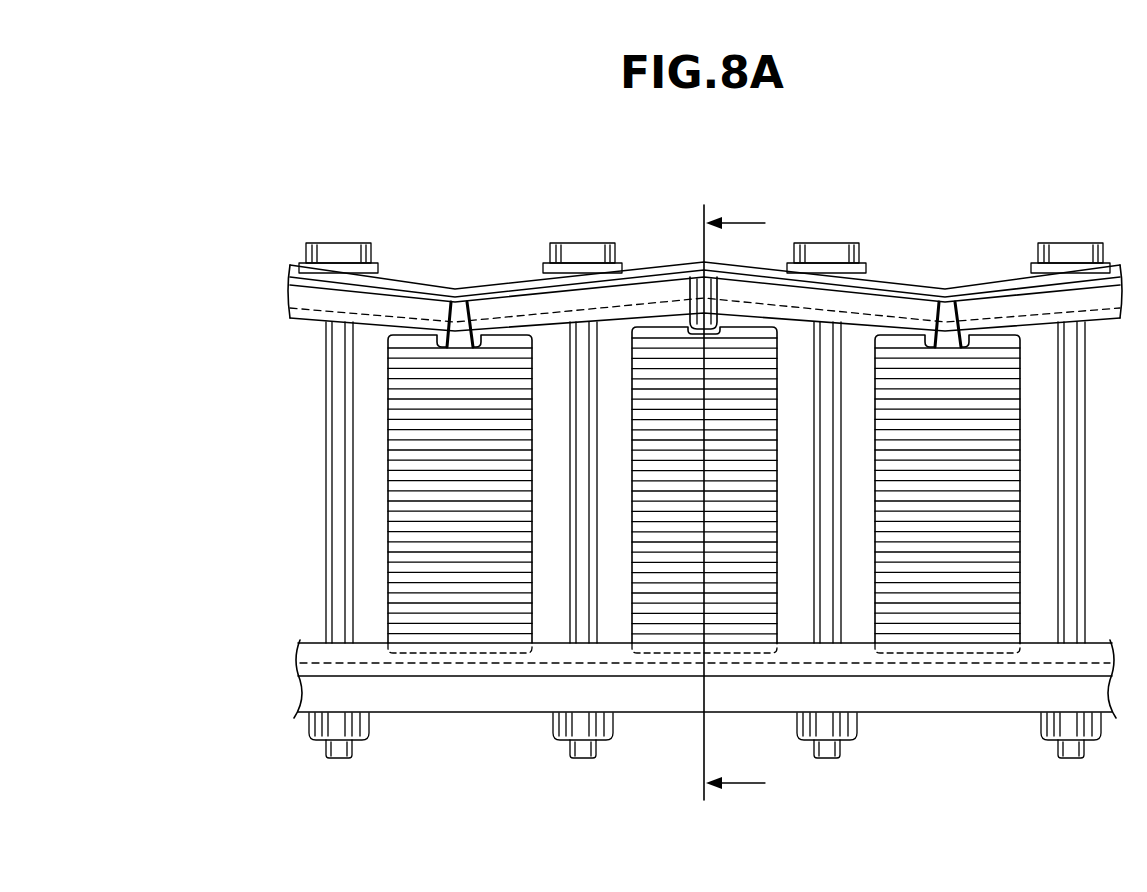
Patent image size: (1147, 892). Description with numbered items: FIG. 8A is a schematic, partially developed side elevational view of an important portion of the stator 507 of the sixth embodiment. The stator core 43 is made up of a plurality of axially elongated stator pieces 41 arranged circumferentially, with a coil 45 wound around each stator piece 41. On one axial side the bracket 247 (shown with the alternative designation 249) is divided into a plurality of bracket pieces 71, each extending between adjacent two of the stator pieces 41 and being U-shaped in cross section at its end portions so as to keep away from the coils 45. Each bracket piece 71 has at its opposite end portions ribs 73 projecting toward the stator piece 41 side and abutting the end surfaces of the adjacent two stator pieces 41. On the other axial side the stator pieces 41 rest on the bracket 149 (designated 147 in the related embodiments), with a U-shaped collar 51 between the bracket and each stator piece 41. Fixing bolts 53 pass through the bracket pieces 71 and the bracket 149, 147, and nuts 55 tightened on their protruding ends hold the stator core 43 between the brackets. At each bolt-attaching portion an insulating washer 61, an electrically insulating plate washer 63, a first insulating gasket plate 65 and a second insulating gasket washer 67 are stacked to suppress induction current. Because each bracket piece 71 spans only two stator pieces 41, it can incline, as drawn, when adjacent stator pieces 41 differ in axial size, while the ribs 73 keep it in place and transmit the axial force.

The stator 507 is at (863, 185).
The bracket 247 is at (284, 320).
The bracket 249 is at (667, 265).
The electrically insulating plate washer 63 is at (292, 270).
The first electrically insulating gasket plate 65 is at (290, 287).
The second electrically insulating gasket washer 67 is at (408, 284).
The bracket piece 71 is at (596, 302).
The rib 73 is at (935, 305).
The insulating washer 61 is at (378, 267).
The fixing bolt 53 is at (335, 432).
The stator core 43 is at (375, 471).
The coil 45 is at (505, 333).
The stator piece 41 is at (403, 551).
The bracket 149 is at (412, 698).
The bracket 147 is at (705, 721).
The U-shaped collar 51 is at (557, 655).
The nut 55 is at (335, 728).